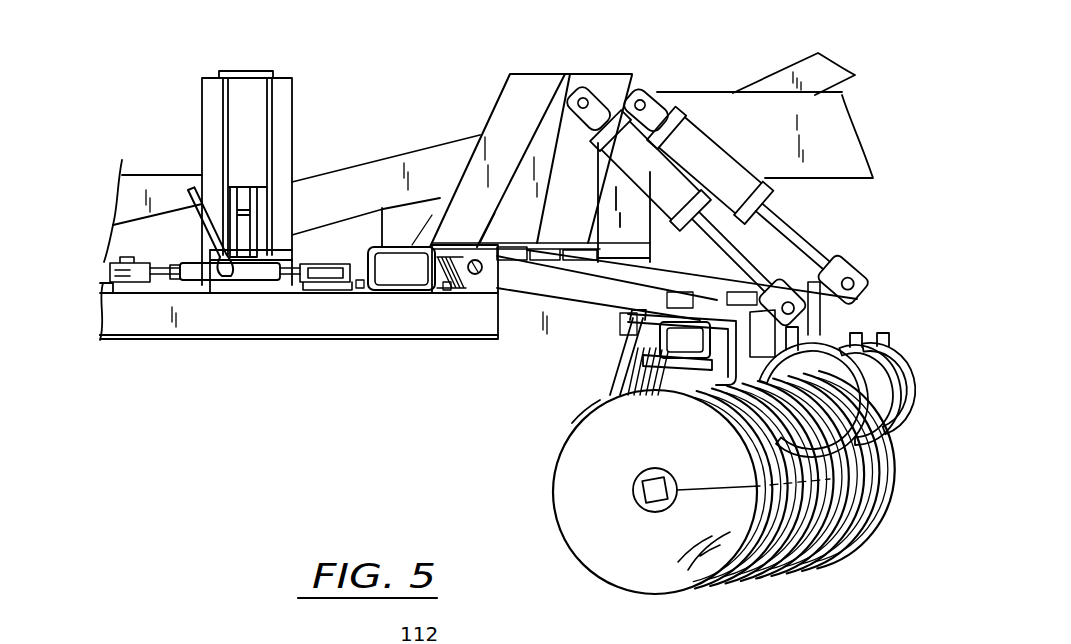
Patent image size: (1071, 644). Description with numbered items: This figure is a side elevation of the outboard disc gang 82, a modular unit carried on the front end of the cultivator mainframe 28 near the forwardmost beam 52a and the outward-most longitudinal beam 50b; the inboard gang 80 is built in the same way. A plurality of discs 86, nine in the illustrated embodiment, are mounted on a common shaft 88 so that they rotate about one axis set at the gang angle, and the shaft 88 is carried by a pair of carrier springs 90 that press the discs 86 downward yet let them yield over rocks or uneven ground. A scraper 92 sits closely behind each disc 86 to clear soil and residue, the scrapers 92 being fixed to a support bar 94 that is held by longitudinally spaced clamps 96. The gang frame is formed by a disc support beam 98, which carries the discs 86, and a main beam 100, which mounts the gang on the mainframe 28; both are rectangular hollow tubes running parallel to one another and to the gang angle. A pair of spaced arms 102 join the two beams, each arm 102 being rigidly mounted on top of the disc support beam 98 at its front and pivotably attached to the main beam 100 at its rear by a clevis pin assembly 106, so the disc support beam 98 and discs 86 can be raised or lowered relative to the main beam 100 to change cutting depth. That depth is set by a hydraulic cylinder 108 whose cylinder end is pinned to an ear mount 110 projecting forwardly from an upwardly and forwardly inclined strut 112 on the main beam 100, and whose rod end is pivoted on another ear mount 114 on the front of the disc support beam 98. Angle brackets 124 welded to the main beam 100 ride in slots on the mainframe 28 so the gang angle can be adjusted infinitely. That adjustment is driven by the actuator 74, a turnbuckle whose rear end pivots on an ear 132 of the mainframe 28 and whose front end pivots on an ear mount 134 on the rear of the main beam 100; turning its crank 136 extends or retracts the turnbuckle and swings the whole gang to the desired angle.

The mainframe 28 is at (207, 342).
The outward-most longitudinal beam 50b is at (247, 330).
The forwardmost beam 52a is at (377, 296).
The actuator 74 is at (195, 293).
The inboard gang 80 is at (838, 572).
The outboard disc gang 82 is at (727, 597).
The discs 86 is at (660, 585).
The shaft 88 is at (633, 492).
The carrier springs 90 is at (855, 367).
The scraper 92 is at (612, 380).
The support bar 94 is at (628, 322).
The clamps 96 is at (660, 378).
The disc support beam 98 is at (578, 427).
The main beam 100 is at (383, 237).
The arms 102 is at (498, 297).
The clevis pin assembly 106 is at (466, 250).
The hydraulic cylinder 108 is at (713, 157).
The ear mount 110 is at (588, 78).
The strut 112 is at (528, 83).
The ear mount 114 is at (835, 306).
The angle brackets 124 is at (360, 285).
The ear 132 is at (112, 272).
The ear mount 134 is at (347, 265).
The crank 136 is at (188, 191).